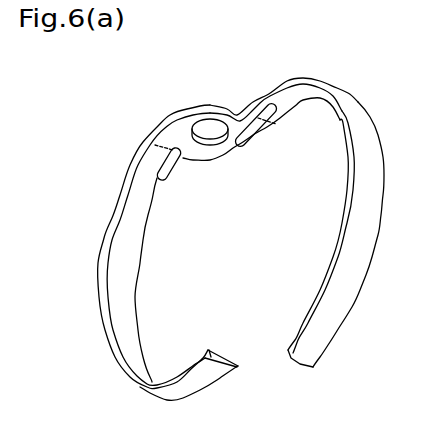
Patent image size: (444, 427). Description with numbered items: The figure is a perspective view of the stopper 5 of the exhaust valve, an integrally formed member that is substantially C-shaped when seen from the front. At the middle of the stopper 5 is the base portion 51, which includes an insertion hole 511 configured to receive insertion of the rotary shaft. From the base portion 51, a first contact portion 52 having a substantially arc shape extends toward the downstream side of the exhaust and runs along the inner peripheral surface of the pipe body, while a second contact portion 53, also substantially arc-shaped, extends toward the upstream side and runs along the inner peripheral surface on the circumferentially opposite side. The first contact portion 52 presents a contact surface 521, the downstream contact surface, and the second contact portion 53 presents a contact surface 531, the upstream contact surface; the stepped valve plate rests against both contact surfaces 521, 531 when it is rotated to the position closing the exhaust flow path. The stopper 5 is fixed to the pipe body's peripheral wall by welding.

The stopper 5 is at (381, 145).
The base portion 51 is at (212, 104).
The insertion hole 511 is at (212, 138).
The first contact portion 52 is at (363, 242).
The contact surface 521 is at (326, 286).
The second contact portion 53 is at (117, 212).
The contact surface 531 is at (141, 255).